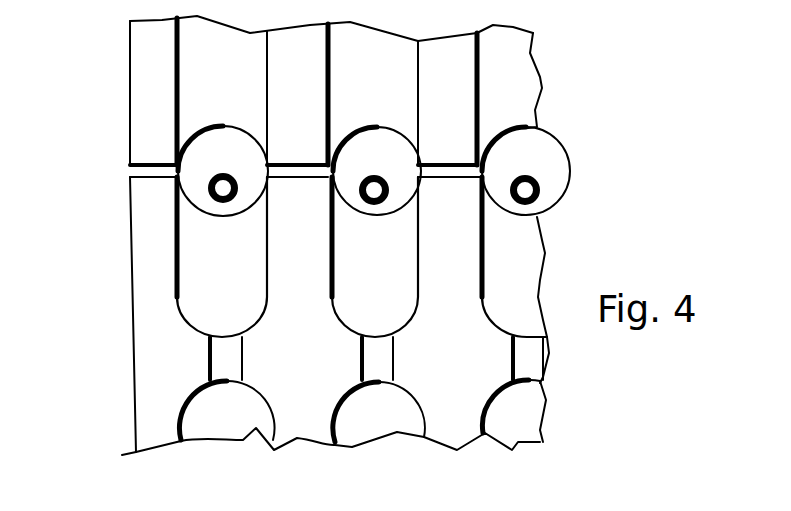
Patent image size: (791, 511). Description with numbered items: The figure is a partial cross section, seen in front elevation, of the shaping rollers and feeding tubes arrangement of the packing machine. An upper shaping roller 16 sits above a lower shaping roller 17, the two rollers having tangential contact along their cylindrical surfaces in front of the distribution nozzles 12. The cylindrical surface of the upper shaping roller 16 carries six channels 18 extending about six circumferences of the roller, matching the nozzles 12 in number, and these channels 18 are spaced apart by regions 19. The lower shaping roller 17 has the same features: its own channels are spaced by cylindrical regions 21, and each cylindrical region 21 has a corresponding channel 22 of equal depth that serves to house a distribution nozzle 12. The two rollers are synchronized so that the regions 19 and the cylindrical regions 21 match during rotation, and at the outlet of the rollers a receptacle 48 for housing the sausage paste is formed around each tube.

The upper shaping roller 16 is at (540, 49).
The lower shaping roller 17 is at (148, 370).
The receptacle 48 is at (203, 159).
The channel 18 is at (224, 134).
The nozzle 12 is at (209, 195).
The region 19 is at (300, 168).
The channel 22 is at (227, 360).
The cylindrical region 21 is at (303, 420).